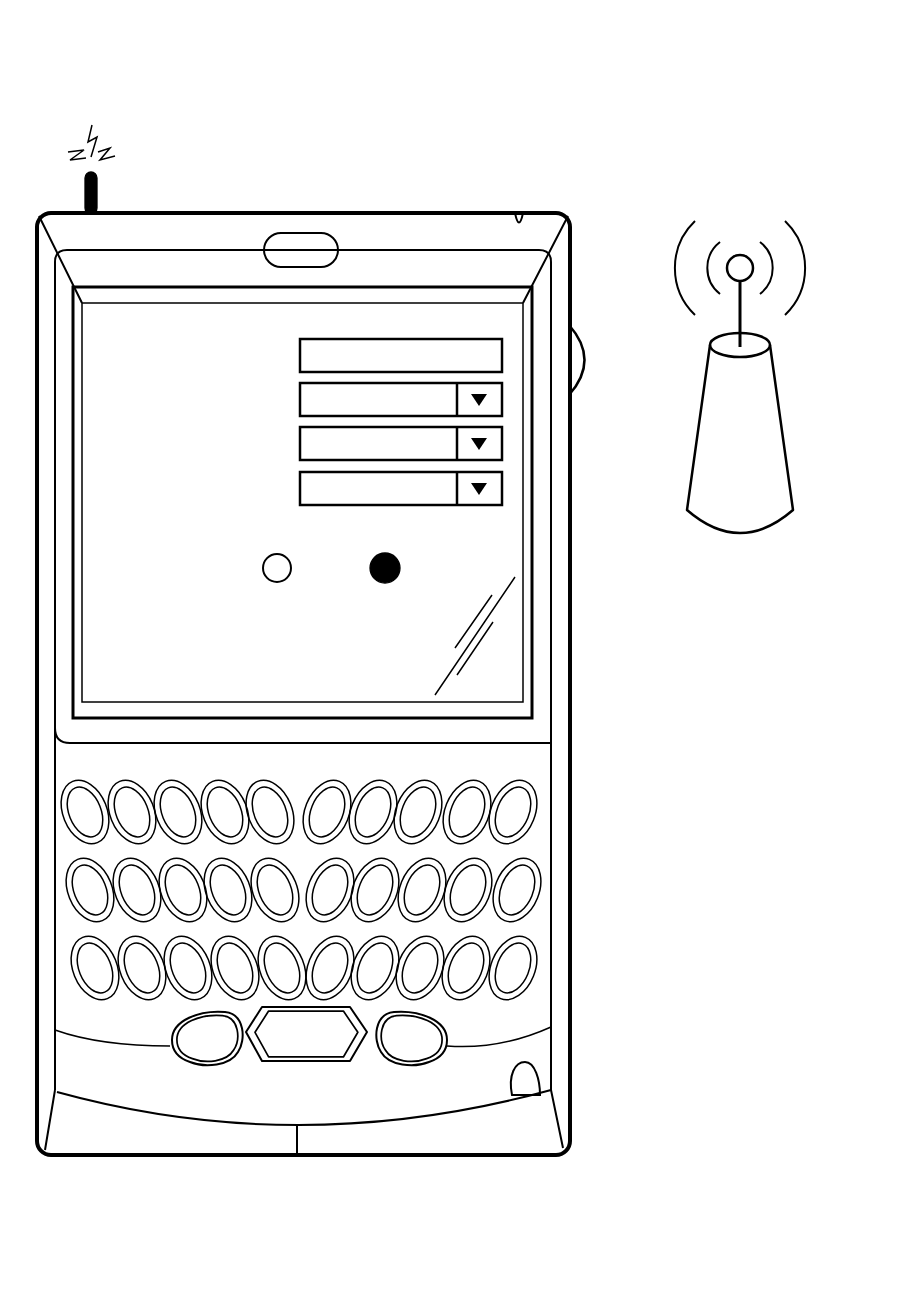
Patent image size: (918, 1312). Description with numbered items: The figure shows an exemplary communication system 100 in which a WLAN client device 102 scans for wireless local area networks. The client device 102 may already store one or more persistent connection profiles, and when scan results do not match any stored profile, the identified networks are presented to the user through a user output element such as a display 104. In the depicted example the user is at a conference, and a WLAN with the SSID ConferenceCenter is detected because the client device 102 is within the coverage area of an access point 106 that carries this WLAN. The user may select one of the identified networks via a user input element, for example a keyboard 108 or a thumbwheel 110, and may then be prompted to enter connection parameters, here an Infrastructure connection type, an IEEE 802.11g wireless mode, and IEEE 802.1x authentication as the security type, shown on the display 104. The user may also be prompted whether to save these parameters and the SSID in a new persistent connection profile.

The communication system 100 is at (192, 86).
The WLAN client device 102 is at (302, 212).
The display 104 is at (494, 675).
The access point 106 is at (739, 535).
The keyboard 108 is at (494, 1022).
The thumbwheel 110 is at (590, 350).